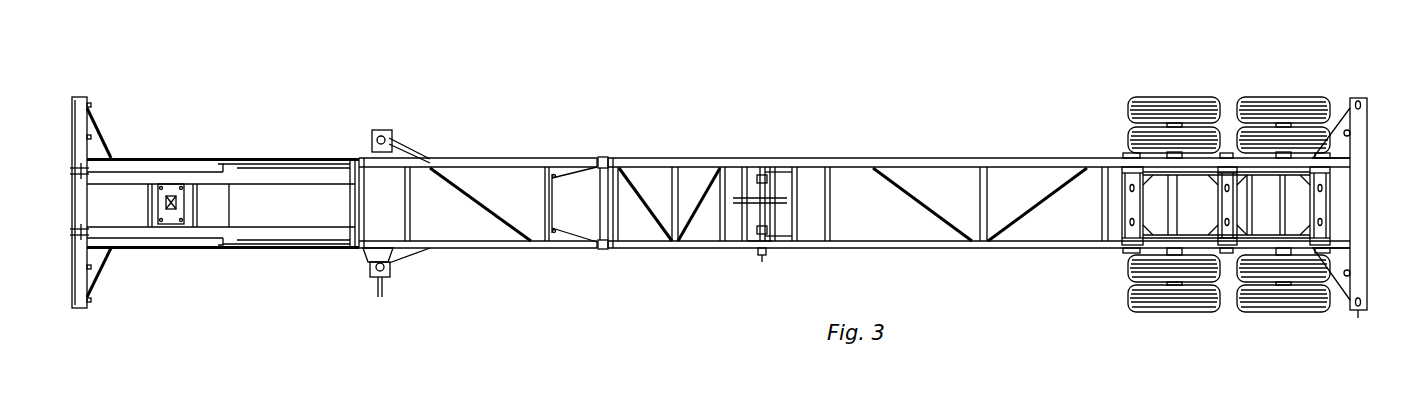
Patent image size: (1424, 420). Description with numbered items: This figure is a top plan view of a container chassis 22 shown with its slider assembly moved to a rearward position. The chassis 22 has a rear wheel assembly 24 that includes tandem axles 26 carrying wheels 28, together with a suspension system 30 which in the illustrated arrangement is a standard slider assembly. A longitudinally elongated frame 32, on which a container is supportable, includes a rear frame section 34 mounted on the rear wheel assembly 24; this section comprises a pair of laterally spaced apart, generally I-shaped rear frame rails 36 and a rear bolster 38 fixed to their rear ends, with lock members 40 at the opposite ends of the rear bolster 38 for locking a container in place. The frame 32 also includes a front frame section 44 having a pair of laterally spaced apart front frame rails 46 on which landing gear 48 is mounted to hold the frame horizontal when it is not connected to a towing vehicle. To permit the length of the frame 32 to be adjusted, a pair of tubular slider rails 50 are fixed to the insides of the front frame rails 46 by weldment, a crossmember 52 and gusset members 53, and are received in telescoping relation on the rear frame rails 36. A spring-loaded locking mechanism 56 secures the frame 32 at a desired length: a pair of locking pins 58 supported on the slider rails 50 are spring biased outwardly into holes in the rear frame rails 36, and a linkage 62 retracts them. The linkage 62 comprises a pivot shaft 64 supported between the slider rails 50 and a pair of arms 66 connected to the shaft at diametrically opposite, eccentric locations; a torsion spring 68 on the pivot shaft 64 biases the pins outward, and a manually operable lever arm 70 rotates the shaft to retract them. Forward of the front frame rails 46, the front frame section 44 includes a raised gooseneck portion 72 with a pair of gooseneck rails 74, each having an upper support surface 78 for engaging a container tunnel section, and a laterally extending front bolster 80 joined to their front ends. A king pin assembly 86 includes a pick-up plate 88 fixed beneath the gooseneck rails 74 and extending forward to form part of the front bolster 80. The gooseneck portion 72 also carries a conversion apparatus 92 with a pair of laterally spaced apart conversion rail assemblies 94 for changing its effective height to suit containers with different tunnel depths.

The chassis 22 is at (931, 100).
The rear wheel assembly 24 is at (1233, 85).
The tandem axles 26 is at (1285, 206).
The wheels 28 is at (1125, 105).
The suspension system 30 is at (1120, 201).
The frame 32 is at (538, 148).
The rear frame section 34 is at (905, 158).
The rear frame rails 36 is at (996, 158).
The rear bolster 38 is at (1362, 140).
The lock members 40 is at (1362, 96).
The front frame section 44 is at (460, 247).
The front frame rails 46 is at (477, 157).
The landing gear 48 is at (382, 132).
The slider rails 50 is at (600, 170).
The crossmember 52 is at (553, 187).
The gusset members 53 is at (571, 227).
The spring-loaded locking mechanism 56 is at (762, 264).
The locking pins 58 is at (770, 172).
The linkage 62 is at (783, 200).
The pivot shaft 64 is at (755, 195).
The arms 66 is at (782, 185).
The torsion spring 68 is at (755, 241).
The lever arm 70 is at (760, 256).
The gooseneck portion 72 is at (262, 150).
The gooseneck rails 74 is at (322, 158).
The upper support surface 78 is at (273, 228).
The front bolster 80 is at (86, 92).
The king pin assembly 86 is at (176, 182).
The pick-up plate 88 is at (223, 193).
The conversion apparatus 92 is at (134, 252).
The conversion rail assemblies 94 is at (136, 152).